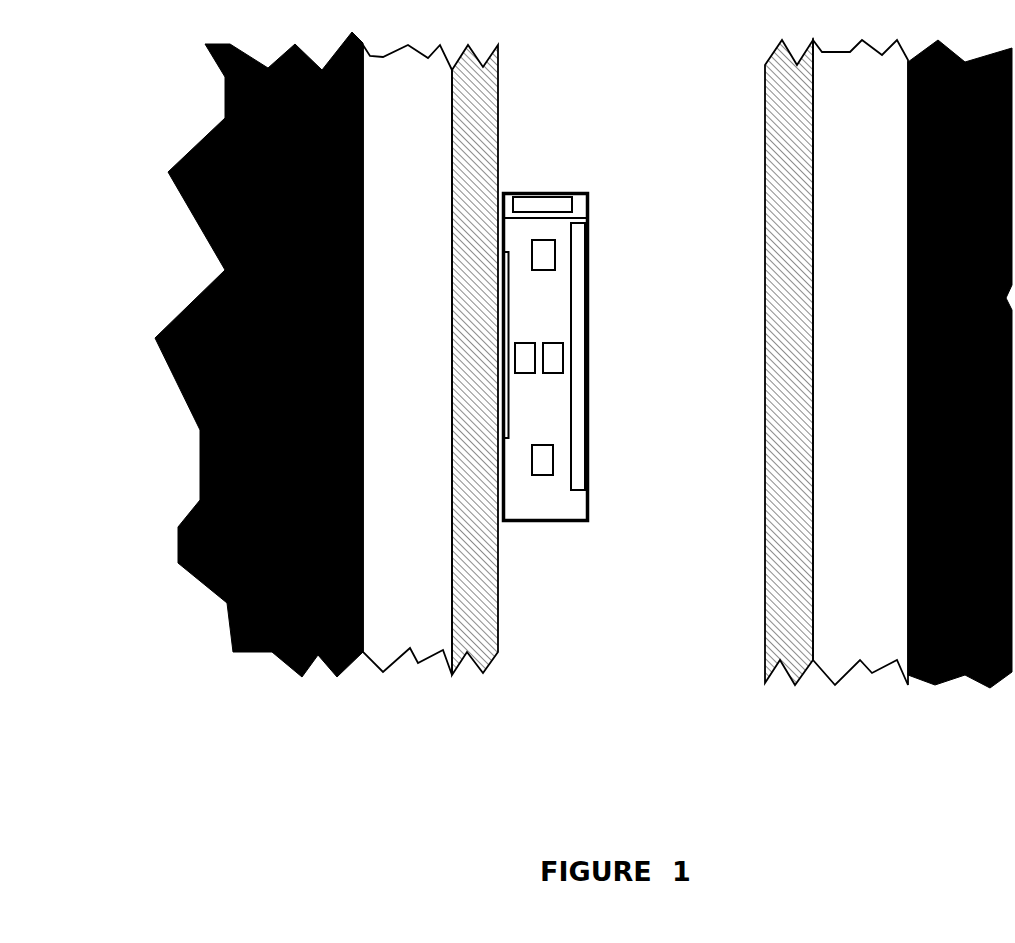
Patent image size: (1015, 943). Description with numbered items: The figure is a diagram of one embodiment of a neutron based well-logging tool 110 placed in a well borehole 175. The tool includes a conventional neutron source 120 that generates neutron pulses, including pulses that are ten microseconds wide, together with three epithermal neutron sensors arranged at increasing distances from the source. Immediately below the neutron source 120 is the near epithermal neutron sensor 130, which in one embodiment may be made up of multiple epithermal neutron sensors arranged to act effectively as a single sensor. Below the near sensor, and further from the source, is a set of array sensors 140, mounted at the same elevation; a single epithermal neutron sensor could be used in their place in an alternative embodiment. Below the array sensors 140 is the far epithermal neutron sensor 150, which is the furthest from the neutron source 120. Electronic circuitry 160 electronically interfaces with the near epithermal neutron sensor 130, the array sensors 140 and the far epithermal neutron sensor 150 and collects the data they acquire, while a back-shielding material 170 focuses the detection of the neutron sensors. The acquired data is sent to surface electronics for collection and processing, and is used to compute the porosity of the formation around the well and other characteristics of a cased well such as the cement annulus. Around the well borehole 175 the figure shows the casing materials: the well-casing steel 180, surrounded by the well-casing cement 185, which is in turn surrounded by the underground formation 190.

The neutron based well-logging tool 110 is at (550, 523).
The neutron source 120 is at (577, 204).
The near epithermal neutron sensor 130 is at (552, 262).
The array sensors 140 is at (523, 373).
The far epithermal neutron sensor 150 is at (543, 475).
The electronic circuitry 160 is at (508, 417).
The back-shielding material 170 is at (572, 302).
The well borehole 175 is at (665, 623).
The well-casing steel 180 is at (473, 618).
The well-casing cement 185 is at (413, 630).
The underground formation 190 is at (290, 665).